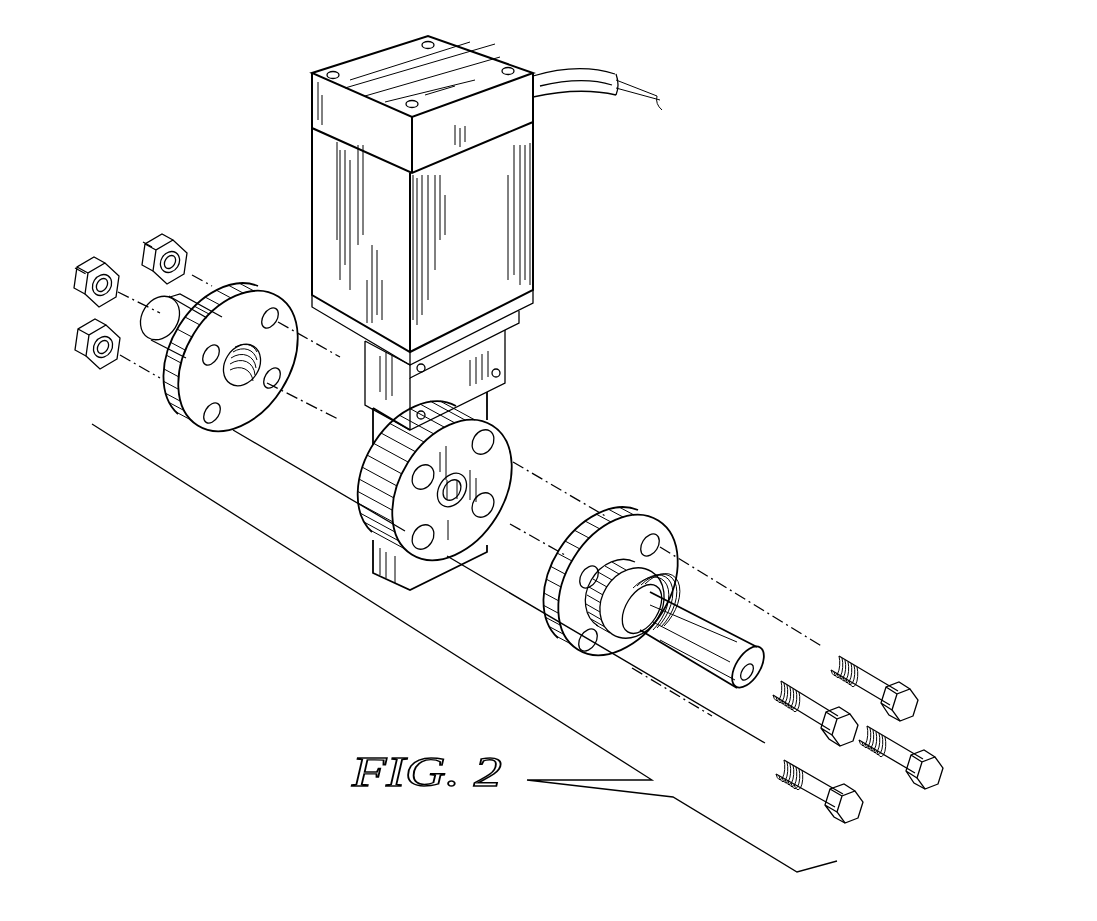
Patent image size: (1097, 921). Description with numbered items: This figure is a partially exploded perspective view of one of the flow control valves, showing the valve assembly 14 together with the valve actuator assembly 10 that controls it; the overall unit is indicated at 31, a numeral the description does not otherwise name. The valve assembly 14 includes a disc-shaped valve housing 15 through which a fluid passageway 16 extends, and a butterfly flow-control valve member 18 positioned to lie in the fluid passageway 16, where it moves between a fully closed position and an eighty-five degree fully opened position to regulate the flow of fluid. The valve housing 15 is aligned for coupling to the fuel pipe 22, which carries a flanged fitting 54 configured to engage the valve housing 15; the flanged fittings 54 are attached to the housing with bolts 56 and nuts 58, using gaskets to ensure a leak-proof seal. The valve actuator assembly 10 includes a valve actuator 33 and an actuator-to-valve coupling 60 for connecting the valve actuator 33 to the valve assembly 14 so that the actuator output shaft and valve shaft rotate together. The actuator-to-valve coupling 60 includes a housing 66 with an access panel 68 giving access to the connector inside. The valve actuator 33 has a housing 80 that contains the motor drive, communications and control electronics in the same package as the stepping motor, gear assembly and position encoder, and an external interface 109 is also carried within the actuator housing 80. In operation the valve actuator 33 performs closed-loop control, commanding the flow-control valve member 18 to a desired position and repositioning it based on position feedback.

The valve actuator assembly 10 is at (657, 210).
The valve assembly 14 is at (590, 422).
The valve housing 15 is at (372, 495).
The fluid passageway 16 is at (476, 484).
The flow-control valve member 18 is at (449, 503).
The fuel pipe 22 is at (185, 313).
The actuator 31 is at (663, 138).
The valve actuator 33 is at (540, 263).
The flanged fittings 54 is at (222, 440).
The bolts 56 is at (877, 677).
The nuts 58 is at (180, 250).
The actuator-to-valve coupling 60 is at (513, 338).
The housing 66 is at (386, 376).
The access panel 68 is at (490, 353).
The housing 80 is at (323, 167).
The external interface 109 is at (585, 68).